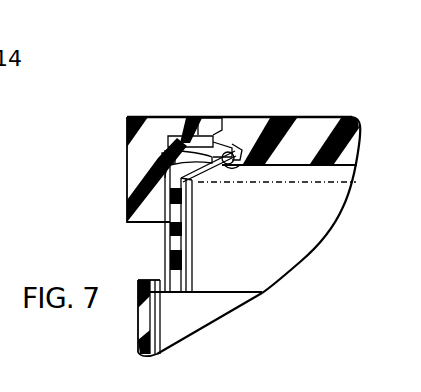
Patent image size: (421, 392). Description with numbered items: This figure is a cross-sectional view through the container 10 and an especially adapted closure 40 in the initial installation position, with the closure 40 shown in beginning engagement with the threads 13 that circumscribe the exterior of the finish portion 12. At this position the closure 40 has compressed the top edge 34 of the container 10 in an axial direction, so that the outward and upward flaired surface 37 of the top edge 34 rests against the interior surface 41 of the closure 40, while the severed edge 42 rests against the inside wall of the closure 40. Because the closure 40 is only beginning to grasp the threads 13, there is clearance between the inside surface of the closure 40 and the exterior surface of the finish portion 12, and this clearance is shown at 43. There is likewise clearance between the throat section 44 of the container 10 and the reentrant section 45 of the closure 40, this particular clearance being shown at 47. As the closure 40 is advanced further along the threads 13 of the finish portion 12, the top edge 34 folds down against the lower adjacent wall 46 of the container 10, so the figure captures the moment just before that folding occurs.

The container 10 is at (142, 336).
The finish portion 12 is at (165, 222).
The threads 13 is at (167, 250).
The top edge 34 is at (180, 133).
The flaired surface 37 is at (216, 131).
The closure 40 is at (268, 116).
The interior surface 41 is at (236, 137).
The severed edge 42 is at (172, 134).
The clearance 43 is at (142, 178).
The throat section 44 is at (223, 170).
The reentrant section 45 is at (233, 154).
The lower adjacent wall 46 is at (176, 150).
The clearance 47 is at (223, 164).